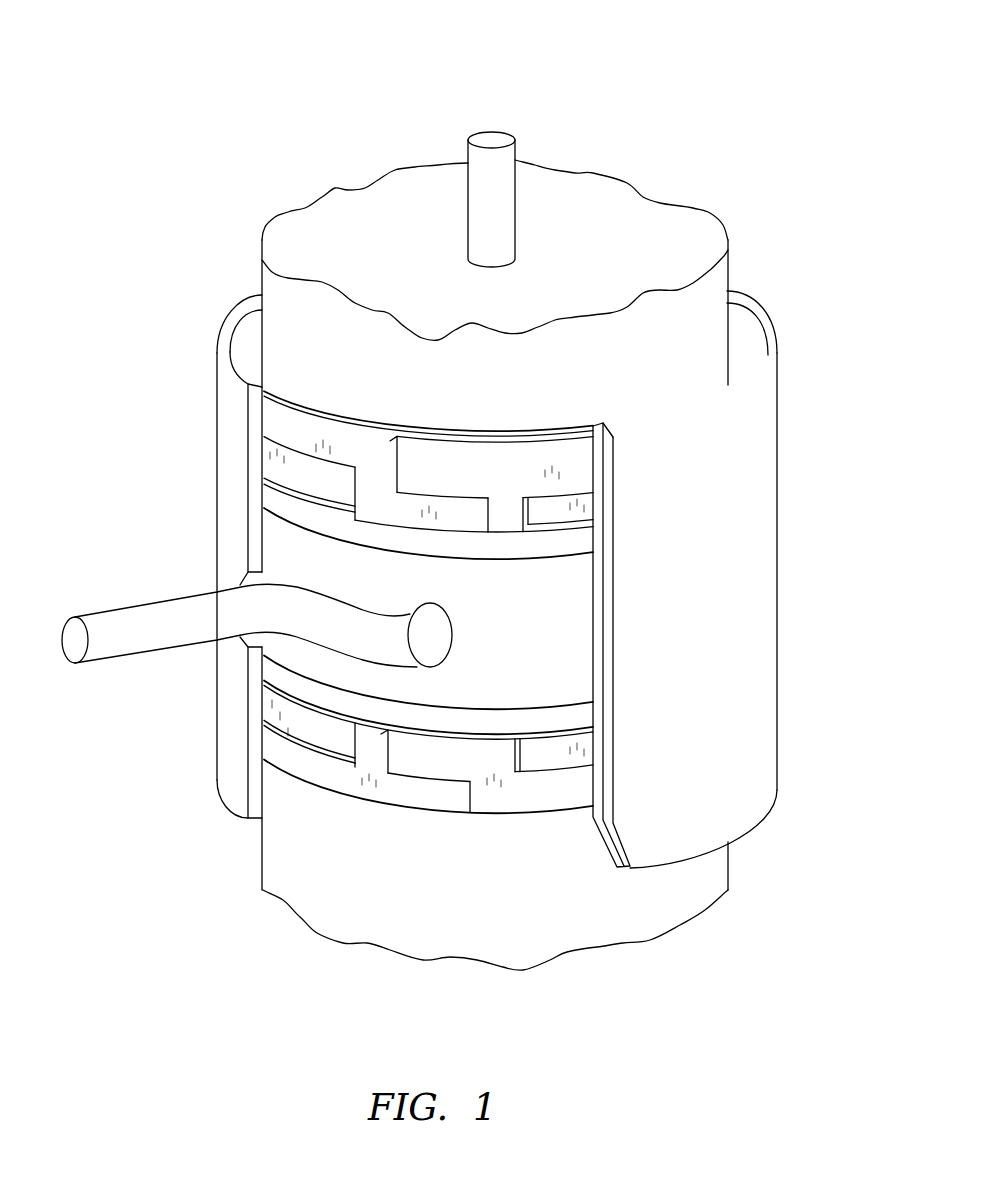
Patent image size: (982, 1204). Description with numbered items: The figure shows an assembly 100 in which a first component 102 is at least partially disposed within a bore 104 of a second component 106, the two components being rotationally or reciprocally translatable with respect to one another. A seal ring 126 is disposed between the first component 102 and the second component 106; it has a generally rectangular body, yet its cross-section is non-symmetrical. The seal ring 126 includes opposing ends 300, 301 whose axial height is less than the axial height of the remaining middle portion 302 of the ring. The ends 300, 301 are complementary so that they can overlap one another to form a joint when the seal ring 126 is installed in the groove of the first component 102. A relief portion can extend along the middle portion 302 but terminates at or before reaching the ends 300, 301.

The assembly 100 is at (697, 68).
The first component 102 is at (715, 277).
The bore 104 is at (740, 335).
The second component 106 is at (767, 415).
The seal ring 126 is at (451, 472).
The opposing end 300 is at (460, 807).
The opposing end 301 is at (450, 767).
The middle portion 302 is at (570, 807).